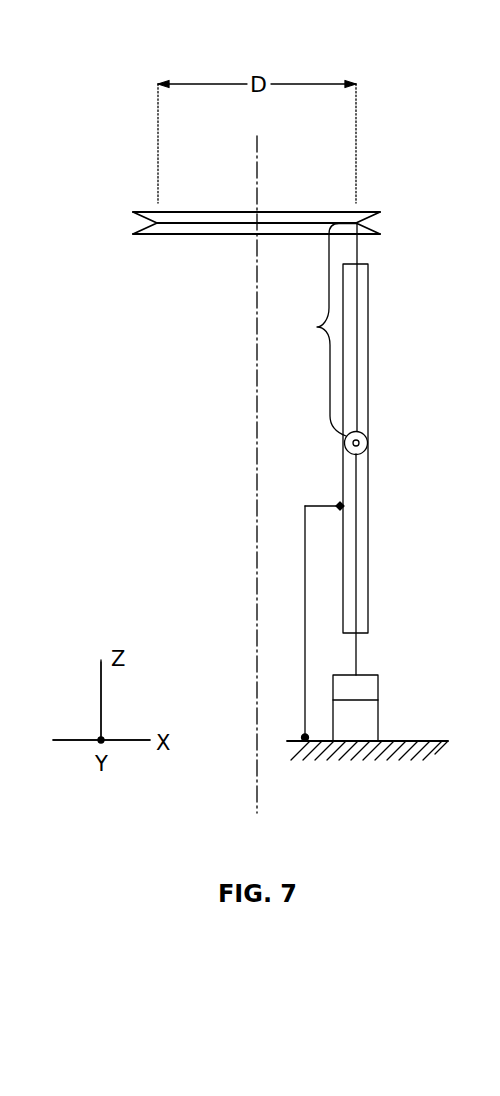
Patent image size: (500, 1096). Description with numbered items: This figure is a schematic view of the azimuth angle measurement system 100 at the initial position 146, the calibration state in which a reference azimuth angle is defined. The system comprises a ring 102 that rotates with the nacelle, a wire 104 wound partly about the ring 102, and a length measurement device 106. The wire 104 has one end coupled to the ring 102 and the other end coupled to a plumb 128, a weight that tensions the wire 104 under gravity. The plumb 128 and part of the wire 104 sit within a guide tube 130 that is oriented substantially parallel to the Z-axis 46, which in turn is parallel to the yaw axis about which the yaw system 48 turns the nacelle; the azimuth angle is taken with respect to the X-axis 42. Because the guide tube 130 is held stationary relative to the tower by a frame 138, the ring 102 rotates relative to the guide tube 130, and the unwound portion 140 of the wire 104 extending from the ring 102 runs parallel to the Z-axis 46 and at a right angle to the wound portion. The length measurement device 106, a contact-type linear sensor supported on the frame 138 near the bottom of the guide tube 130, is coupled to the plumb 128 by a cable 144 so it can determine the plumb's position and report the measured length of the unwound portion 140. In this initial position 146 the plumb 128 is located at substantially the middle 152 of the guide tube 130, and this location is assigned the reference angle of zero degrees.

The azimuth angle measurement system 100 is at (120, 82).
The ring 102 is at (277, 212).
The wire 104 is at (357, 255).
The guide tube 130 is at (368, 338).
The unwound portion of wire 140 is at (317, 327).
The plumb 128 is at (364, 436).
The cable 144 is at (356, 583).
The length measurement device 106 is at (368, 720).
The frame 138 is at (418, 743).
The initial position 146 is at (230, 439).
The middle of guide tube 152 is at (406, 464).
The Z-axis 46 is at (102, 718).
The X-axis 42 is at (132, 742).
The yaw system 48 is at (257, 768).